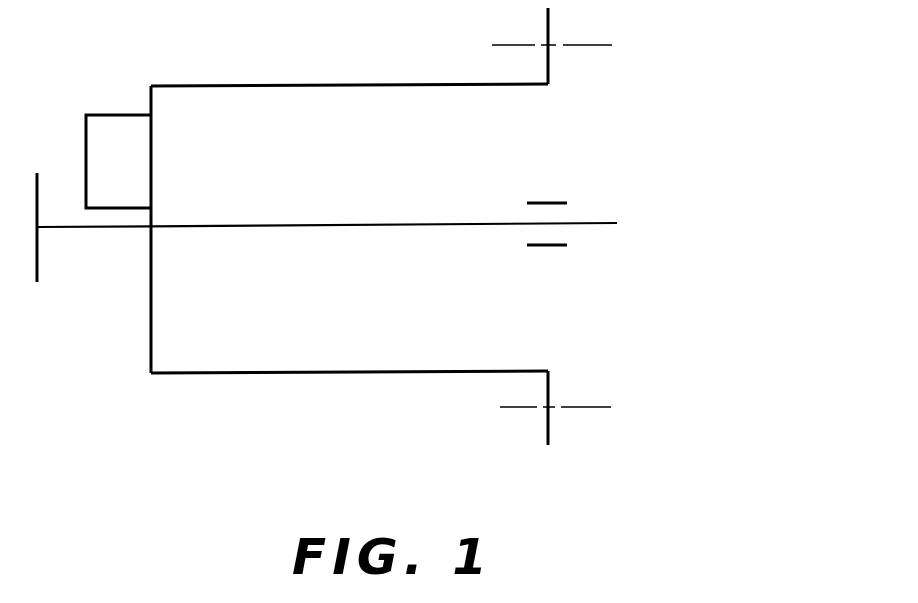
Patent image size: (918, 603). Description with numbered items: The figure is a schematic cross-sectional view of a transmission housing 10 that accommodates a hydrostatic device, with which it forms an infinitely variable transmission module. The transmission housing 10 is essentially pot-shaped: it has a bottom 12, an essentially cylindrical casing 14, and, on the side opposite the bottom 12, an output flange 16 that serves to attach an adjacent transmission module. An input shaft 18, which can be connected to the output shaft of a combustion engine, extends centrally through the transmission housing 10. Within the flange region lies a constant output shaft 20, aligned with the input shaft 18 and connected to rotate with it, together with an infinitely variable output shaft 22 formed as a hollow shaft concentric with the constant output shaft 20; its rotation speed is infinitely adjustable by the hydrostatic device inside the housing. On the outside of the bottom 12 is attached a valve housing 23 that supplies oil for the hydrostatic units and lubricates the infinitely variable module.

The transmission housing 10 is at (352, 422).
The bottom 12 is at (150, 353).
The casing 14 is at (241, 374).
The output flange 16 is at (547, 433).
The input shaft 18 is at (117, 232).
The constant output shaft 20 is at (597, 222).
The infinitely variable output shaft 22 is at (558, 247).
The valve housing 23 is at (116, 125).